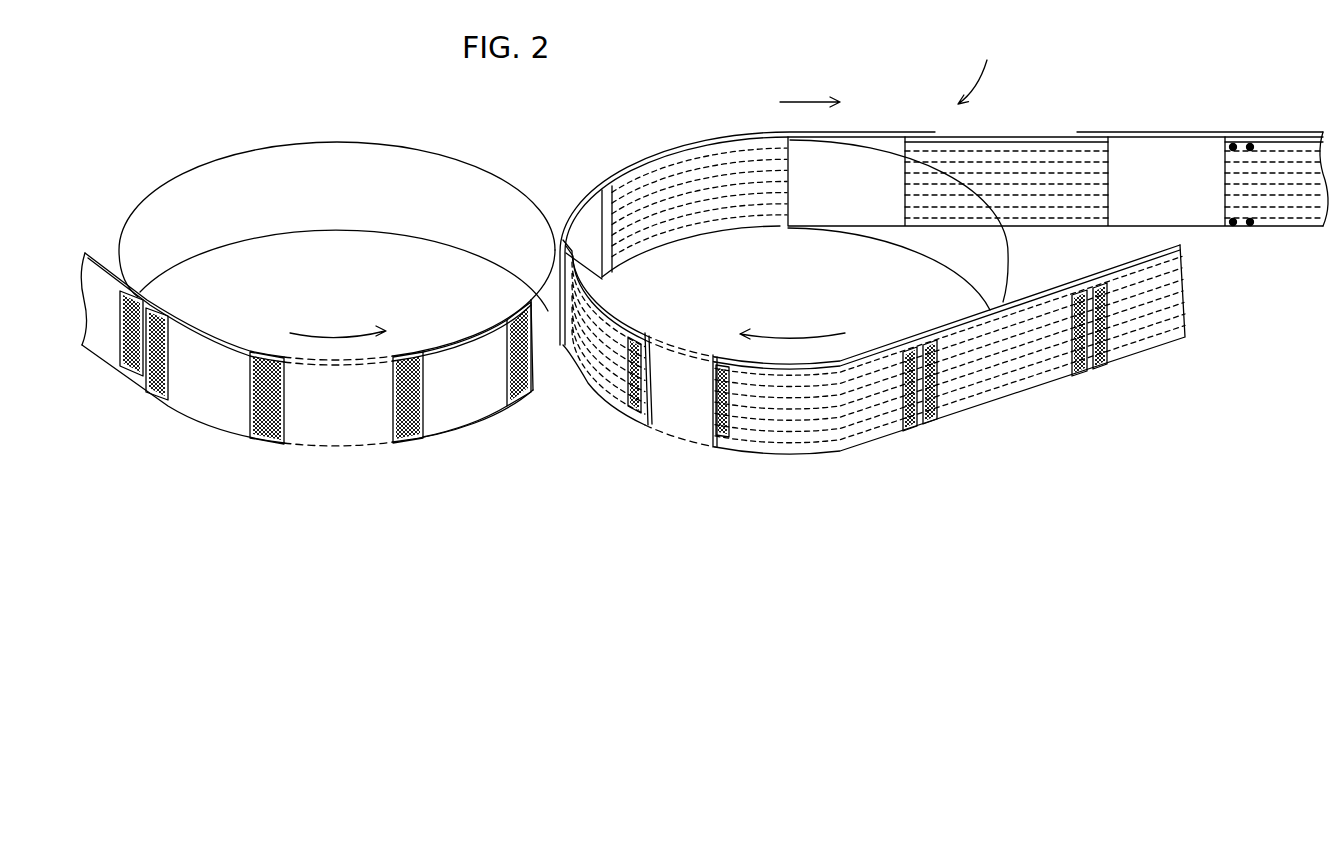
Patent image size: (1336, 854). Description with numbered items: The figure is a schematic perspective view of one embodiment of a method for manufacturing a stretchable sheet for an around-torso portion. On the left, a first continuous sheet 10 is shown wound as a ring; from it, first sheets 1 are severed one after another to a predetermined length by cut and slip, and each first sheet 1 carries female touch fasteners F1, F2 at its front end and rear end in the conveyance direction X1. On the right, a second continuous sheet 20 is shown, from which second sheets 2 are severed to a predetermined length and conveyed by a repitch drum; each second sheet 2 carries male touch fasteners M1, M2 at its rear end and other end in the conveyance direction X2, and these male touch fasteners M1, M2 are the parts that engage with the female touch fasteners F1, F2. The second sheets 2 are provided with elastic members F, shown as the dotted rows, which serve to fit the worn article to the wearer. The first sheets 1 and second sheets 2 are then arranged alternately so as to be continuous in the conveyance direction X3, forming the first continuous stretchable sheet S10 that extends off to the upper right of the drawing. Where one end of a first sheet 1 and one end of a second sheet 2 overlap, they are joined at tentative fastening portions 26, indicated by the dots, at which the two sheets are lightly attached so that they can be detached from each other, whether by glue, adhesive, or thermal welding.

The first sheet 1 is at (475, 413).
The second sheet 2 is at (692, 150).
The first continuous sheet 10 is at (102, 350).
The second continuous sheet 20 is at (1148, 350).
The tentative fastening portion 26 is at (1250, 145).
The elastic member F is at (720, 153).
The female touch fastener F1 is at (262, 436).
The female touch fastener F2 is at (155, 405).
The male touch fastener M1 is at (725, 445).
The male touch fastener M2 is at (632, 413).
The first continuous stretchable sheet S10 is at (941, 188).
The conveyance direction X1 is at (338, 322).
The conveyance direction X2 is at (792, 322).
The conveyance direction X3 is at (810, 90).